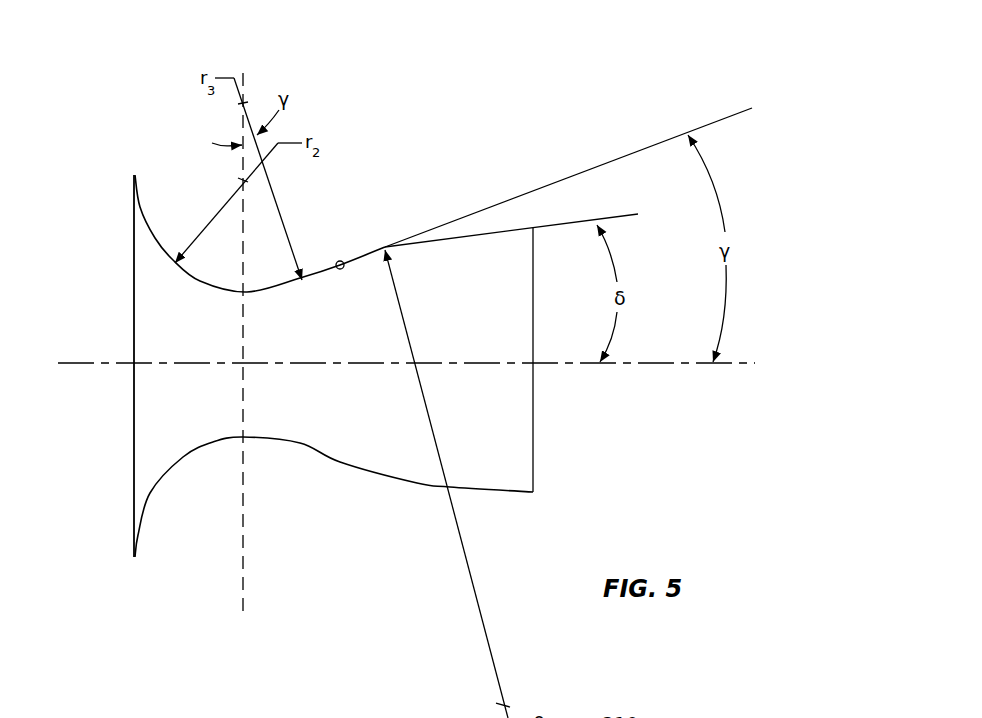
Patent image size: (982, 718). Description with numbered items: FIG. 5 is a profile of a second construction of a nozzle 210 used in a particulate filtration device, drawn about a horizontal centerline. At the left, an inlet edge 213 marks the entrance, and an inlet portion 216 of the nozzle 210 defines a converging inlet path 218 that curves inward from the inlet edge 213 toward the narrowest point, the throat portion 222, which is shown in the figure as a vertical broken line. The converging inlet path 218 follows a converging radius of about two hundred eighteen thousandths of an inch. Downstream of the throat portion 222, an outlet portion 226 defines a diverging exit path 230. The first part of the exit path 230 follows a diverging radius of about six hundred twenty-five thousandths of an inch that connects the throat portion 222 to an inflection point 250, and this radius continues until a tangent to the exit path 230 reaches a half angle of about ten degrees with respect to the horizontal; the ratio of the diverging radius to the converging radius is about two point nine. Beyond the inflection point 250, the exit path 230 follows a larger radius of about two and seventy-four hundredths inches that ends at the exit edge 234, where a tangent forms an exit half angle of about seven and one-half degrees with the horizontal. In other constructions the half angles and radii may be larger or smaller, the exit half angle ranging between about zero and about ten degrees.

The nozzle 210 is at (496, 69).
The inlet edge 213 is at (133, 306).
The inlet portion 216 is at (178, 196).
The converging inlet path 218 is at (155, 488).
The throat portion 222 is at (253, 450).
The outlet portion 226 is at (382, 523).
The diverging exit path 230 is at (410, 483).
The exit edge 234 is at (533, 463).
The inflection point 250 is at (340, 260).